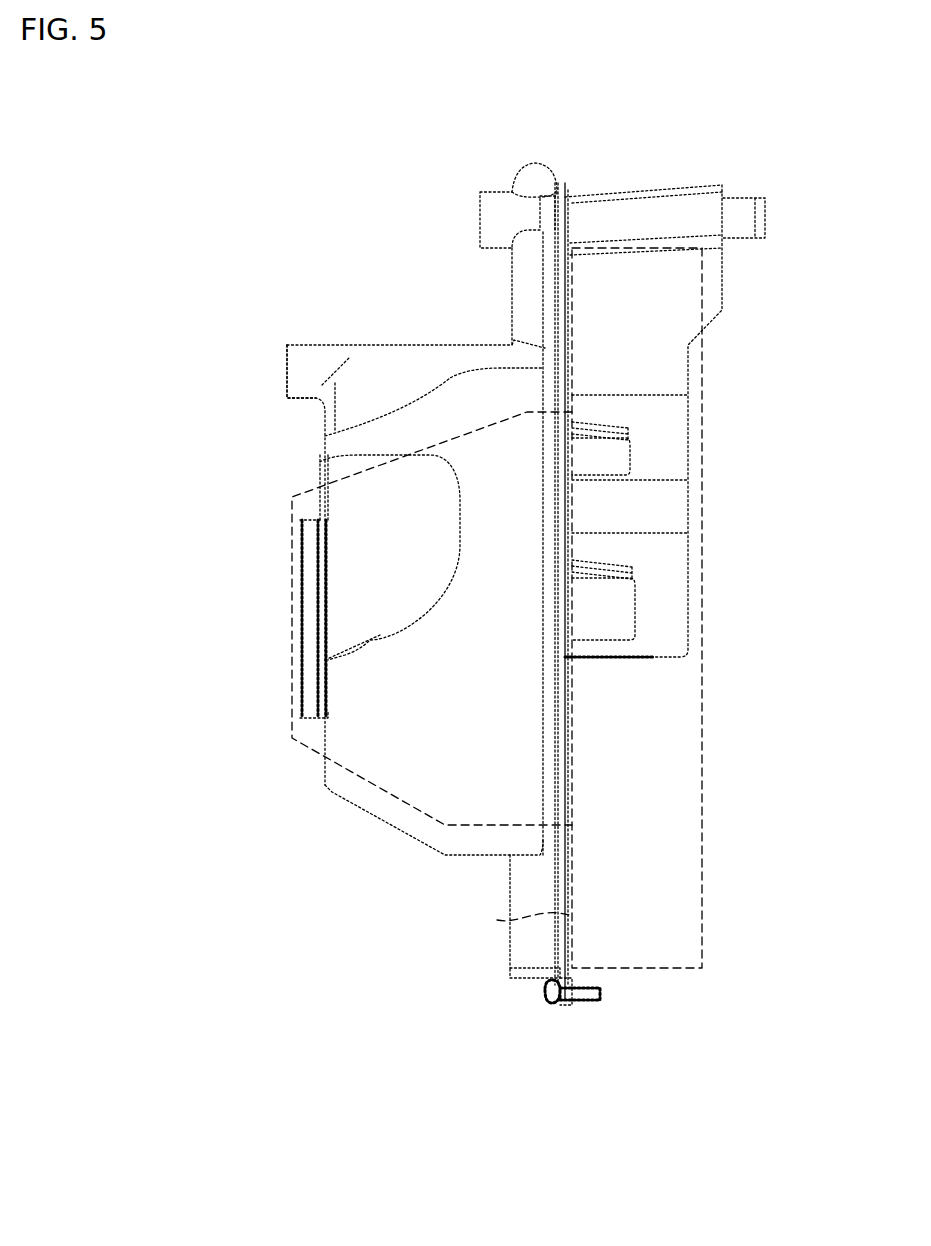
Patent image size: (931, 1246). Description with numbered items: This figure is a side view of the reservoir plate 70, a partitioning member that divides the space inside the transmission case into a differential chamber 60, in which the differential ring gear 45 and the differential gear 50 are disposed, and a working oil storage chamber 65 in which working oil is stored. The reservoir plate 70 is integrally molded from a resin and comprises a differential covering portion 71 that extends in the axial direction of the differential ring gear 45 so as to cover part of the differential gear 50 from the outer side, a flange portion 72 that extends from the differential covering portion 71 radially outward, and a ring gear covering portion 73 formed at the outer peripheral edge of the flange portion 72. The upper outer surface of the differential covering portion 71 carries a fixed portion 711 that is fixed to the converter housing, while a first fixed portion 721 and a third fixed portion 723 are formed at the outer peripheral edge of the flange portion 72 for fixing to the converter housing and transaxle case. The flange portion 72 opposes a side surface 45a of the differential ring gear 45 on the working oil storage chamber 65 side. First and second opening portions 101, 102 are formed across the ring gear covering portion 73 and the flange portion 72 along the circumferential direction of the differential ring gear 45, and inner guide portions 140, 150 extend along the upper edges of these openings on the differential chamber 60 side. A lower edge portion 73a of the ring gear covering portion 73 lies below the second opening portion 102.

The reservoir plate 70 is at (334, 192).
The first fixed portion 721 is at (492, 215).
The fixed portion 711 is at (306, 375).
The differential covering portion 71 is at (420, 707).
The differential gear 50 is at (292, 620).
The flange portion 72 is at (563, 960).
The third fixed portion 723 is at (560, 1000).
The ring gear covering portion 73 is at (640, 337).
The lower edge portion 73a is at (660, 657).
The inner guide portion 140 is at (600, 427).
The first opening portion 101 is at (625, 462).
The inner guide portion 150 is at (600, 565).
The second opening portion 102 is at (630, 612).
The differential ring gear 45 is at (702, 815).
The side surface 45a is at (509, 906).
The differential chamber 60 is at (750, 931).
The working oil storage chamber 65 is at (398, 925).